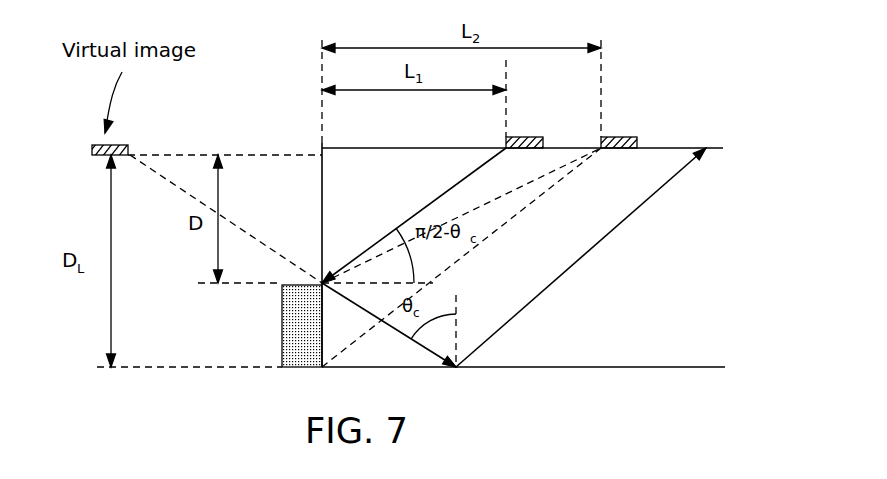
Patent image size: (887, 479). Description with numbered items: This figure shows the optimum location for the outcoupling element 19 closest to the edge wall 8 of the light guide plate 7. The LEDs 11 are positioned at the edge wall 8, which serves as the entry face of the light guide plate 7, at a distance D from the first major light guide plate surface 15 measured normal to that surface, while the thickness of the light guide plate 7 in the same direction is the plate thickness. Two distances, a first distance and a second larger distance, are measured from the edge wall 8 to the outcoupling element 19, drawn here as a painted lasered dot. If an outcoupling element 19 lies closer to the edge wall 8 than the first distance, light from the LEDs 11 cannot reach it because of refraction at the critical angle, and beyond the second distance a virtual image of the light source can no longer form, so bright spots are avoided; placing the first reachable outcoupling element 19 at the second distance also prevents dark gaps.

The light guide plate 7 is at (560, 355).
The edge wall 8 is at (322, 184).
The LEDs 11 is at (283, 321).
The first major light guide plate surface 15 is at (659, 148).
The outcoupling element 19 is at (530, 137).